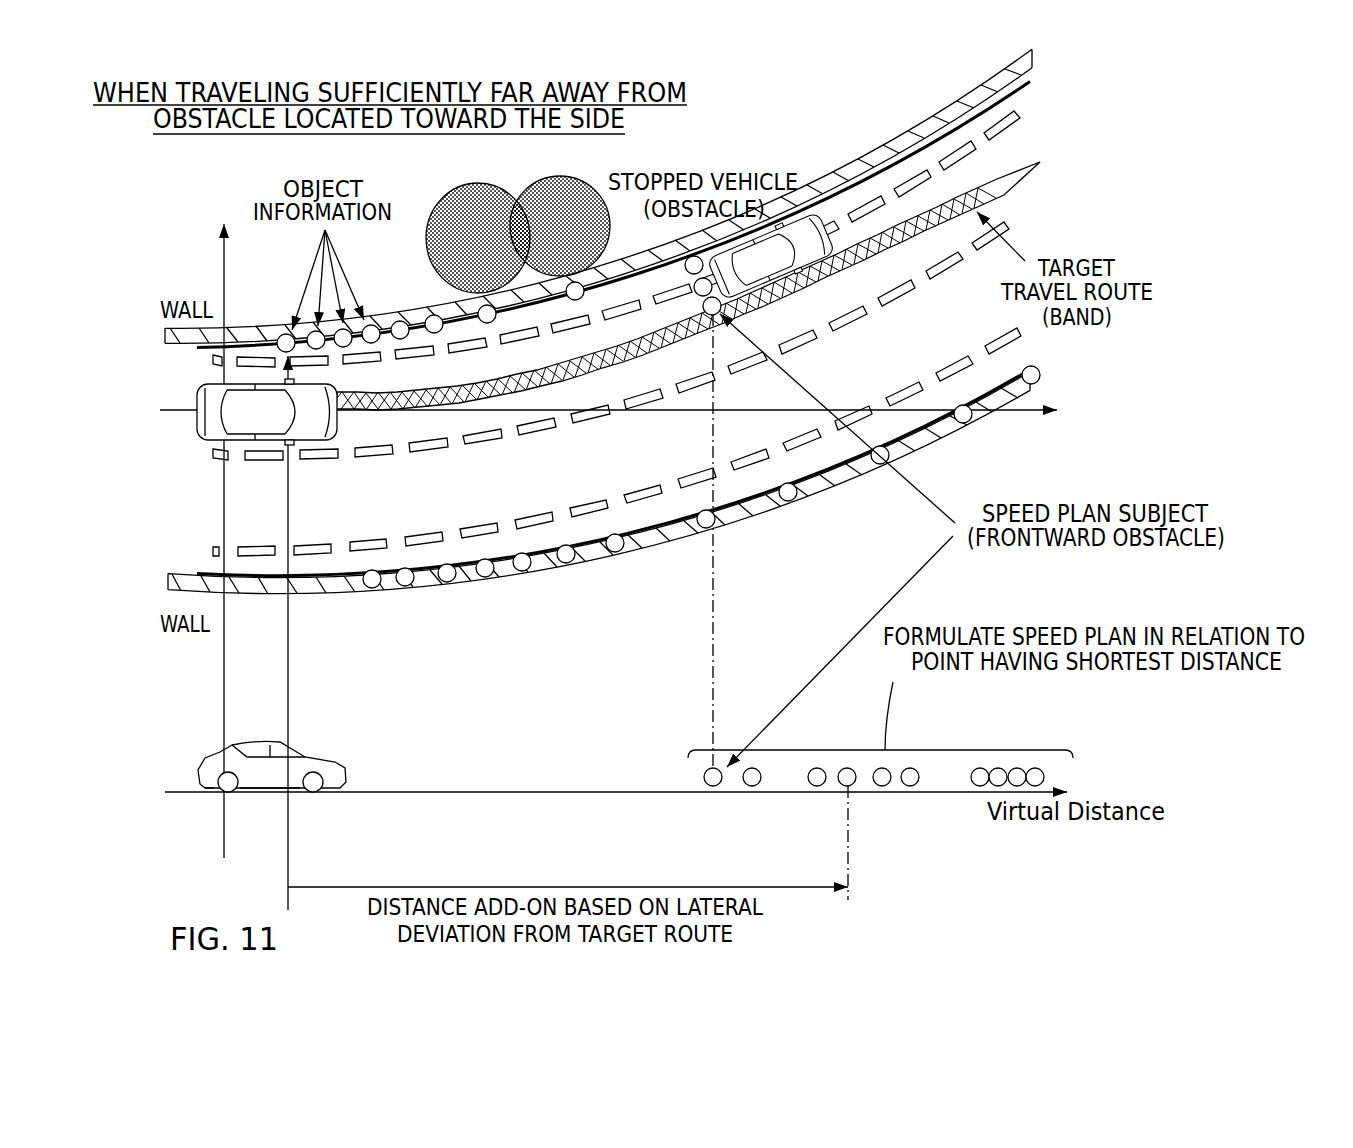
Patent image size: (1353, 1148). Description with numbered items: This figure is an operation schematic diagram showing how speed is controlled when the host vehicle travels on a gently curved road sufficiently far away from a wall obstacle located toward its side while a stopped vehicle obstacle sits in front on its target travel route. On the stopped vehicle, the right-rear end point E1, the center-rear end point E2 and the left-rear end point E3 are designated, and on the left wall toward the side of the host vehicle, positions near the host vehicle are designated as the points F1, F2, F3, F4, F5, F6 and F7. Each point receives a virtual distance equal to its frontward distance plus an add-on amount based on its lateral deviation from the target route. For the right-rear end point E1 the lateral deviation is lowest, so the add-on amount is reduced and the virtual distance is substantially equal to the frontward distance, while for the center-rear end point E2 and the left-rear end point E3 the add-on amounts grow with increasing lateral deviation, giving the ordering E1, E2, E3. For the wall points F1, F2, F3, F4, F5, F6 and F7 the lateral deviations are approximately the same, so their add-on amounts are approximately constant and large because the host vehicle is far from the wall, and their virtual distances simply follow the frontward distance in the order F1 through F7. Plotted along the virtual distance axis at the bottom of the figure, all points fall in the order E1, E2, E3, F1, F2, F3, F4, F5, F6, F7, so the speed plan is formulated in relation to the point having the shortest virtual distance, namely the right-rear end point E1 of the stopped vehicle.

The point on left wall F1 is at (286, 333).
The point on left wall F2 is at (318, 349).
The point on left wall F3 is at (347, 347).
The point on left wall F4 is at (370, 325).
The point on left wall F5 is at (402, 339).
The point on left wall F6 is at (438, 333).
The point on left wall F7 is at (493, 321).
The right-rear end point E1 is at (707, 313).
The center-rear end point E2 is at (697, 294).
The left-rear end point E3 is at (686, 272).